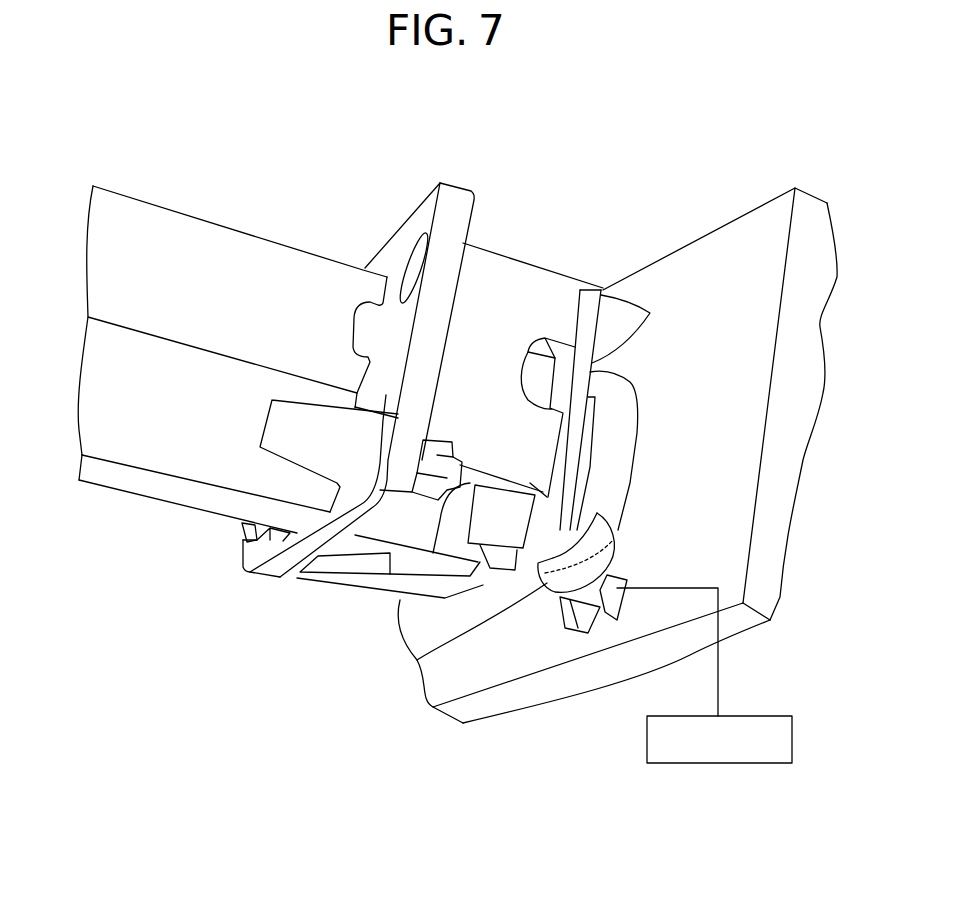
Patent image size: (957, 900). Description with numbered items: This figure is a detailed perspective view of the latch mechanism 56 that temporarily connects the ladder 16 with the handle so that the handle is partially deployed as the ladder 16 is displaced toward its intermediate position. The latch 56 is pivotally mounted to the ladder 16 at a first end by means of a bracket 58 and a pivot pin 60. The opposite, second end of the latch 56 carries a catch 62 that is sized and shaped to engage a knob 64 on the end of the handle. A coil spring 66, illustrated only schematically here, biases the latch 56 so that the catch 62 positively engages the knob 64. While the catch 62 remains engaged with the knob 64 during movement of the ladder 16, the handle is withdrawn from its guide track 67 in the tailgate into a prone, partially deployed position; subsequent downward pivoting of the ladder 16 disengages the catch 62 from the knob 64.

The ladder 16 is at (745, 253).
The latch mechanism 56 is at (400, 715).
The bracket 58 is at (575, 628).
The pivot pin 60 is at (587, 605).
The catch 62 is at (417, 660).
The knob 64 is at (620, 408).
The coil spring 66 is at (742, 763).
The guide track 67 is at (143, 452).